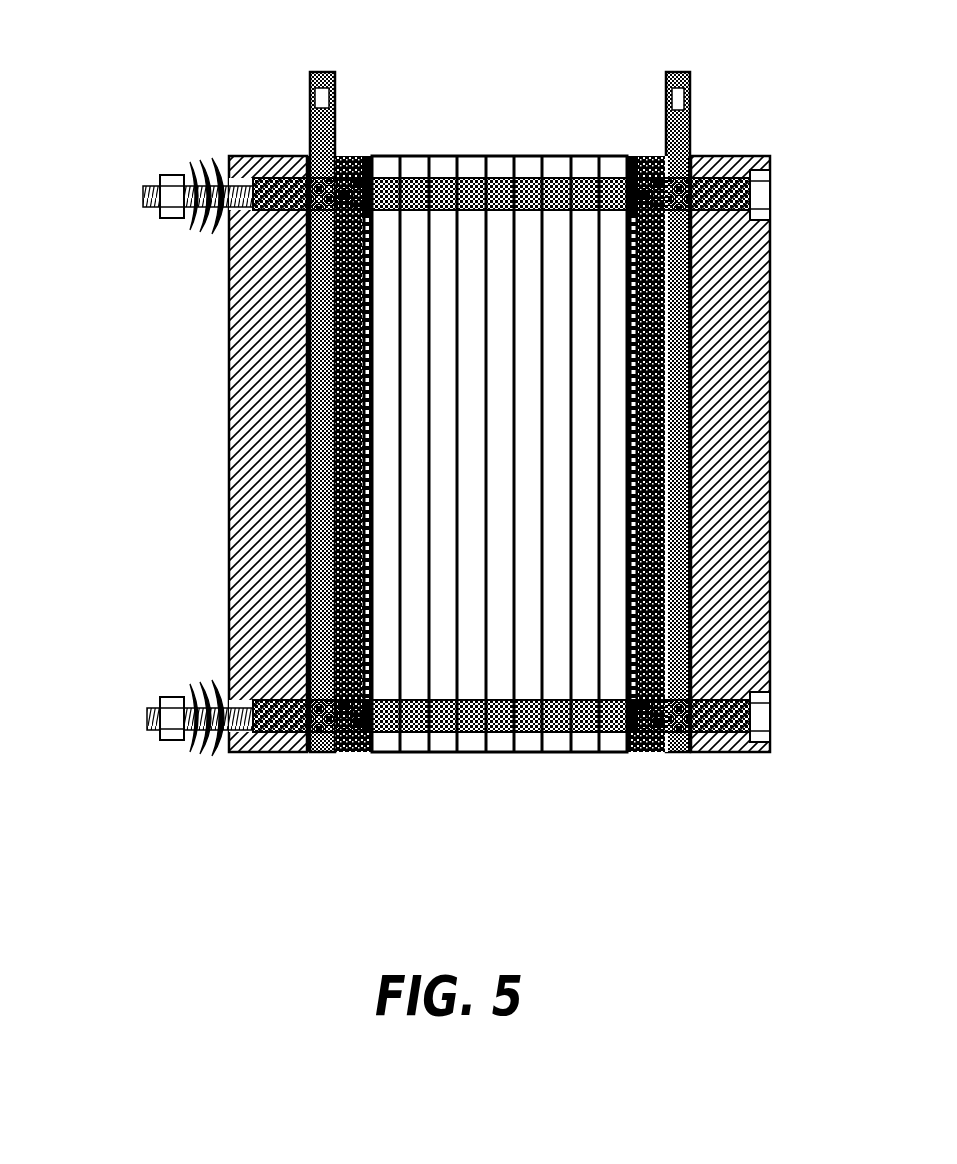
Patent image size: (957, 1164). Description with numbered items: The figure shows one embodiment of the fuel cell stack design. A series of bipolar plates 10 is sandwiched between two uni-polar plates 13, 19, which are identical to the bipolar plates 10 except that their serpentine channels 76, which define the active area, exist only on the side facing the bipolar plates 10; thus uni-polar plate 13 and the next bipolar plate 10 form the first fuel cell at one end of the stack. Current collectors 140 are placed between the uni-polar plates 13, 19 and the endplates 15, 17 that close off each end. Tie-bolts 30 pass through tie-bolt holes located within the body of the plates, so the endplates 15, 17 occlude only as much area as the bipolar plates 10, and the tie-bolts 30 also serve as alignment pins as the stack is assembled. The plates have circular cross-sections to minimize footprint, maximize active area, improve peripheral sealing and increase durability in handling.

The bipolar plate 10 is at (625, 143).
The uni-polar plate 13 is at (350, 156).
The endplate 15 is at (272, 156).
The endplate 17 is at (725, 156).
The uni-polar plate 19 is at (647, 156).
The tie-bolt 30 is at (143, 193).
The serpentine channel 76 is at (360, 753).
The current collector 140 is at (318, 72).